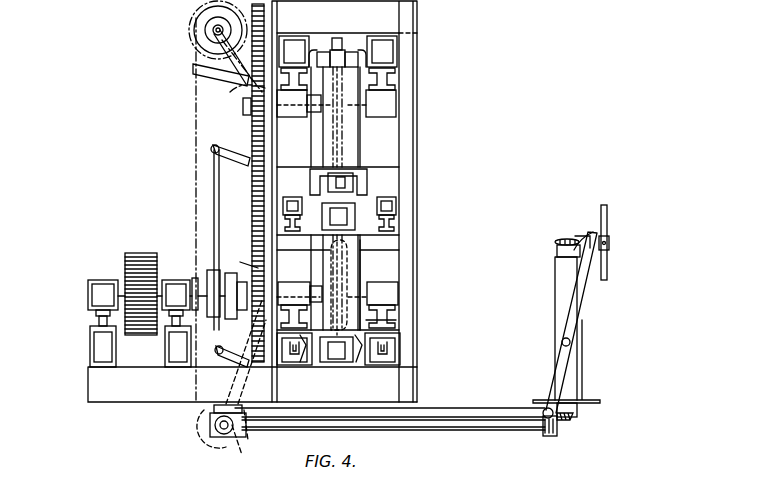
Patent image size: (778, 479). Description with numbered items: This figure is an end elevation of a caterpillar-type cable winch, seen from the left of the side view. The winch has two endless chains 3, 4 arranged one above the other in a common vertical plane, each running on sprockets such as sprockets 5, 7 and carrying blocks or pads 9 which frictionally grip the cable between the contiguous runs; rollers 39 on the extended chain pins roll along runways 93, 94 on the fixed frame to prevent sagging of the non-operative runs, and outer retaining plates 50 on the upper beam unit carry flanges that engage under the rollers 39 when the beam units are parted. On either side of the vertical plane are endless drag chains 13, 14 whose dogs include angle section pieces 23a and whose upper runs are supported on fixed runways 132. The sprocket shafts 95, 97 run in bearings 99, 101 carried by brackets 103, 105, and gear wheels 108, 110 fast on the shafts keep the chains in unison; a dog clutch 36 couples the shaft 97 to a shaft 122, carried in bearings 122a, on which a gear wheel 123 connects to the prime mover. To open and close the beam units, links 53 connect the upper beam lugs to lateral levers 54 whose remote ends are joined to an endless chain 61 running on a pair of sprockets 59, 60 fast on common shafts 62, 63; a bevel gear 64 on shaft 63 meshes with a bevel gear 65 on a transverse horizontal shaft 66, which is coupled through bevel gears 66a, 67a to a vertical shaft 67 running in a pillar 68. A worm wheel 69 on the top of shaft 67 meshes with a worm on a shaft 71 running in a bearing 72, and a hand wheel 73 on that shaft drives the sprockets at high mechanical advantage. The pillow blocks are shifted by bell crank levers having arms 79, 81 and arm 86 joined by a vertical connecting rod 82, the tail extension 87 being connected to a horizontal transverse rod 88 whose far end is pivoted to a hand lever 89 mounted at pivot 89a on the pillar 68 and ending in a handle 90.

The endless chain 3 is at (352, 128).
The endless chain 4 is at (361, 248).
The sprocket 5 is at (348, 150).
The sprocket 7 is at (350, 266).
The blocks or pads 9 is at (339, 38).
The endless drag chain 13 is at (392, 210).
The endless drag chain 14 is at (288, 213).
The angle section pieces 23a is at (257, 193).
The clutch 36 is at (232, 272).
The rollers 39 is at (324, 52).
The outer retaining plates 50 is at (313, 185).
The link 53 is at (312, 348).
The lateral lever 54 is at (222, 78).
The sprocket 59 is at (199, 18).
The sprocket 60 is at (222, 447).
The endless chain 61 is at (196, 114).
The common shaft 62 is at (212, 33).
The common shaft 63 is at (214, 419).
The bevel gear 64 is at (215, 426).
The bevel gear 65 is at (243, 436).
The transverse horizontal shaft 66 is at (462, 425).
The bevel gear 66a is at (556, 434).
The vertical shaft 67 is at (563, 258).
The bevel gear 67a is at (575, 418).
The vertical pillar 68 is at (584, 334).
The worm wheel 69 is at (565, 239).
The shaft 71 is at (580, 237).
The bearing 72 is at (586, 232).
The hand wheel 73 is at (607, 226).
The arm 79 is at (312, 135).
The arm 81 is at (216, 146).
The vertical connecting rod 82 is at (214, 190).
The arm 86 is at (236, 348).
The tail extension 87 is at (243, 390).
The horizontal transverse rod 88 is at (494, 408).
The hand lever 89 is at (582, 296).
The pivot 89a is at (562, 342).
The handle 90 is at (609, 243).
The runways 93 is at (338, 51).
The runways 94 is at (358, 352).
The shaft 95 is at (243, 107).
The shaft 97 is at (365, 292).
The bearing 99 is at (295, 117).
The bearing 101 is at (294, 284).
The bracket 103 is at (388, 80).
The bracket 105 is at (392, 322).
The gear wheel 108 is at (210, 4).
The gear wheel 110 is at (246, 262).
The shaft 122 is at (118, 286).
The bearings 122a is at (178, 284).
The gear wheel 123 is at (145, 268).
The fixed runways 132 is at (394, 222).